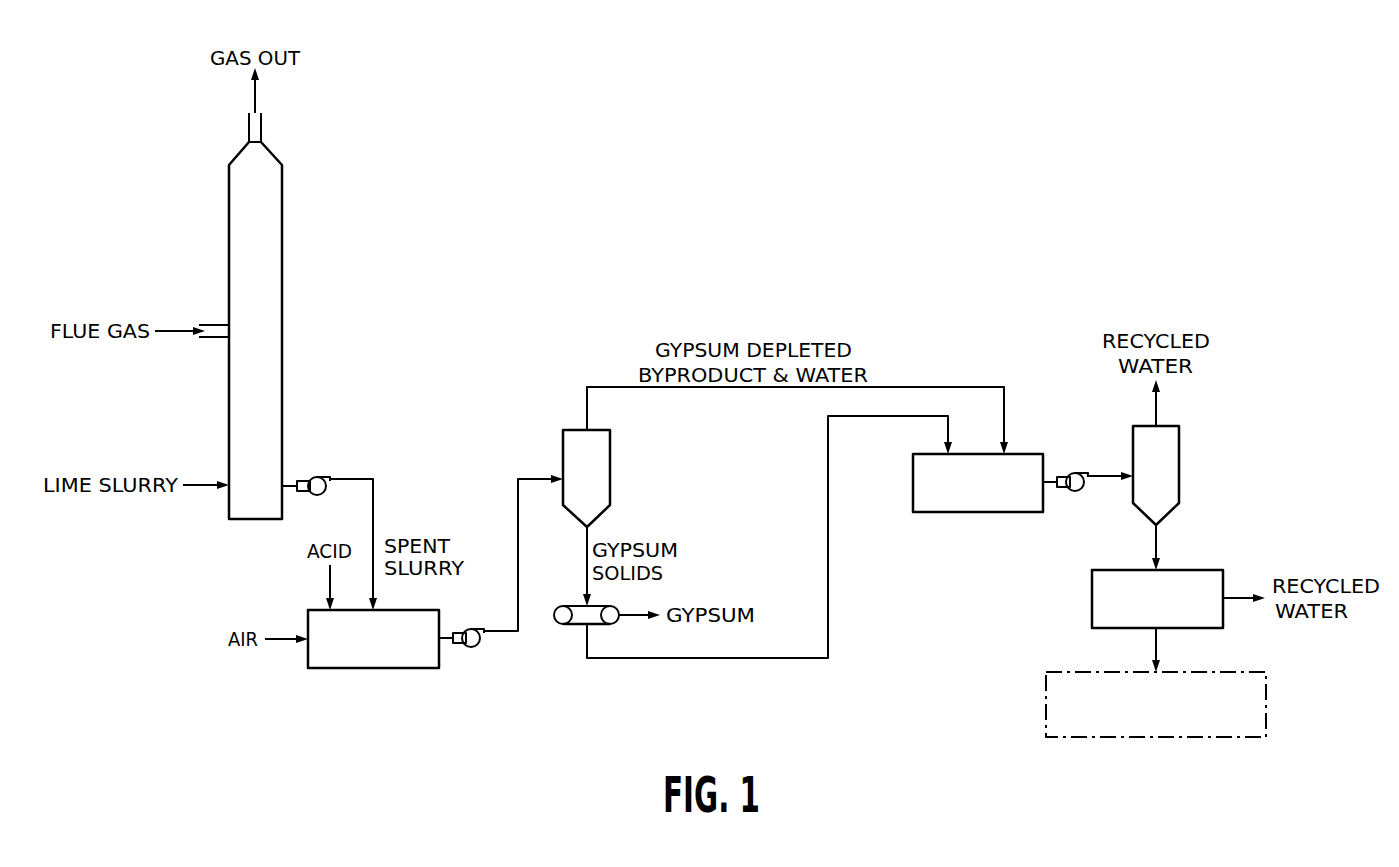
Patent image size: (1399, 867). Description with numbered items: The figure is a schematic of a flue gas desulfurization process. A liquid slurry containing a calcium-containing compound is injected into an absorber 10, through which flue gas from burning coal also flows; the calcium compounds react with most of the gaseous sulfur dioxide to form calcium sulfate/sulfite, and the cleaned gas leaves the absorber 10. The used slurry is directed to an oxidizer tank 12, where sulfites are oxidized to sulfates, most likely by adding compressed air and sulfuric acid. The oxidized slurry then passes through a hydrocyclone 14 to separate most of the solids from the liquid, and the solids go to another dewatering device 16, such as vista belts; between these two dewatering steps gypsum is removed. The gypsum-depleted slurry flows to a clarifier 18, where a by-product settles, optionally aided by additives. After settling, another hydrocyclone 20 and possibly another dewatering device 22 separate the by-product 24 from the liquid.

The absorber 10 is at (229, 207).
The oxidizer tank 12 is at (323, 668).
The hydrocyclone 14 is at (563, 445).
The dewatering device 16 is at (578, 625).
The clarifier 18 is at (925, 512).
The hydrocyclone 20 is at (1133, 443).
The dewatering device 22 is at (1106, 570).
The by-product 24 is at (1062, 672).